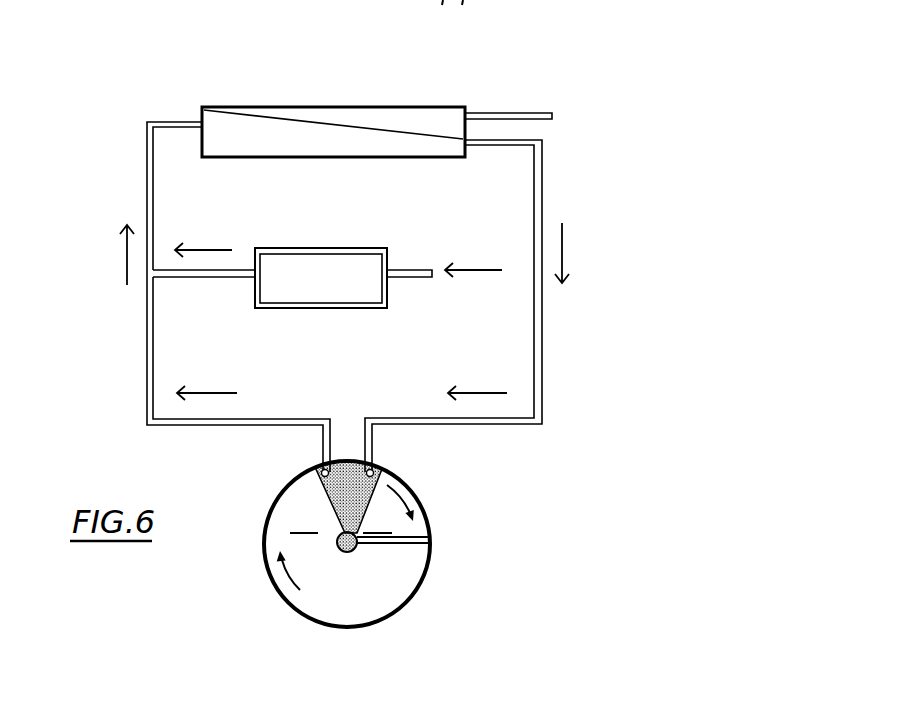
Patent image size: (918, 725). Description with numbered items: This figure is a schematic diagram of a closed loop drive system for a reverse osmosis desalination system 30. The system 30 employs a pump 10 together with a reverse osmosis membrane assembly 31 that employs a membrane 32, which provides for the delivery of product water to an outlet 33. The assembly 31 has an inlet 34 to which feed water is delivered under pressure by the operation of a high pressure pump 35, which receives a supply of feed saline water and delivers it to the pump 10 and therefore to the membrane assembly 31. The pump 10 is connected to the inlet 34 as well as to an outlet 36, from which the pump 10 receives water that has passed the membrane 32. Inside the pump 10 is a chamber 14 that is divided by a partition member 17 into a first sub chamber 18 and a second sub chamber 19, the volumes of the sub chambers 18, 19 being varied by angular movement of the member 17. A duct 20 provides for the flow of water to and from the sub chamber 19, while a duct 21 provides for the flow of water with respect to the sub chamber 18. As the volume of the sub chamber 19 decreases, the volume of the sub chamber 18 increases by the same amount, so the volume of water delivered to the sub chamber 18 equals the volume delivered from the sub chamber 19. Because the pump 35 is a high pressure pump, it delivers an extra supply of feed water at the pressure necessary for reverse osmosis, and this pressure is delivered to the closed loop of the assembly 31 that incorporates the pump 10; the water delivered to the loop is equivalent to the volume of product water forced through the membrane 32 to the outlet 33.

The pump 10 is at (396, 544).
The chamber 14 is at (278, 594).
The second partition member 17 is at (398, 543).
The first sub chamber 18 is at (380, 520).
The second sub chamber 19 is at (307, 520).
The duct 20 is at (316, 468).
The duct 21 is at (385, 468).
The desalination system 30 is at (379, 239).
The reverse osmosis membrane assembly 31 is at (315, 119).
The membrane 32 is at (375, 131).
The outlet 33 is at (495, 112).
The inlet 34 is at (172, 121).
The high pressure pump 35 is at (348, 296).
The outlet 36 is at (502, 146).